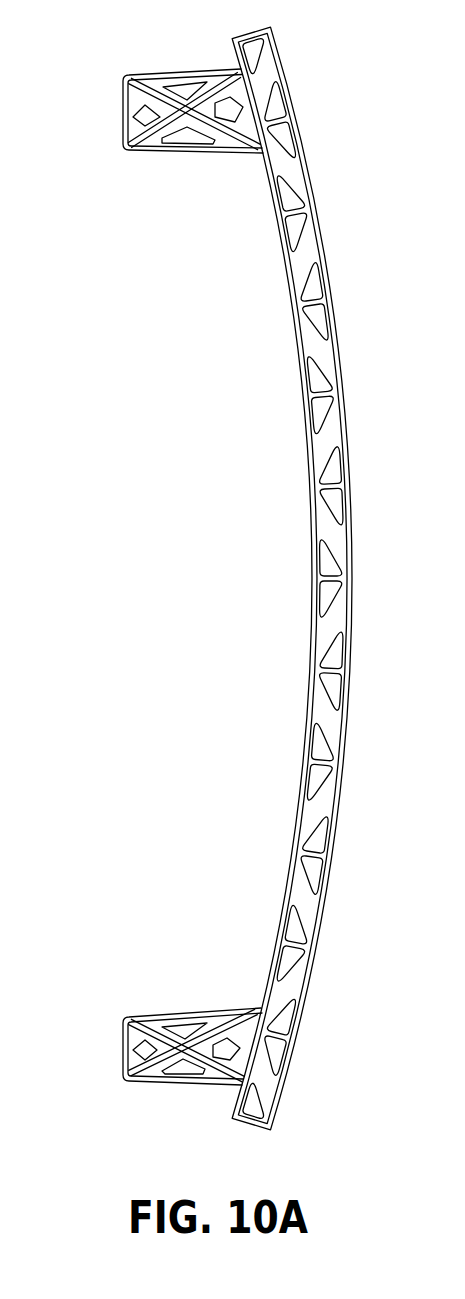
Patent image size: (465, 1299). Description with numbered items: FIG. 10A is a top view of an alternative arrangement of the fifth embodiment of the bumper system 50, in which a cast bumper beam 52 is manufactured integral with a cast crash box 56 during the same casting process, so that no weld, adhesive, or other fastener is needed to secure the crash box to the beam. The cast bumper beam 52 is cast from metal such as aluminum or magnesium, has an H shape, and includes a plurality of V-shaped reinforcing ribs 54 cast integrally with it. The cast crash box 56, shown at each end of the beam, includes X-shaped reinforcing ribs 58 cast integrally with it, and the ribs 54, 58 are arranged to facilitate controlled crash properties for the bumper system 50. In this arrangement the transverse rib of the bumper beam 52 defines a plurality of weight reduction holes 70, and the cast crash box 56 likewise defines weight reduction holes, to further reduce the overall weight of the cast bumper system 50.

The bumper system 50 is at (95, 87).
The cast bumper beam 52 is at (352, 573).
The reinforcing ribs 54 is at (277, 137).
The cast crash box 56 is at (185, 75).
The reinforcing ribs 58 is at (155, 135).
The weight reduction holes 70 is at (267, 93).